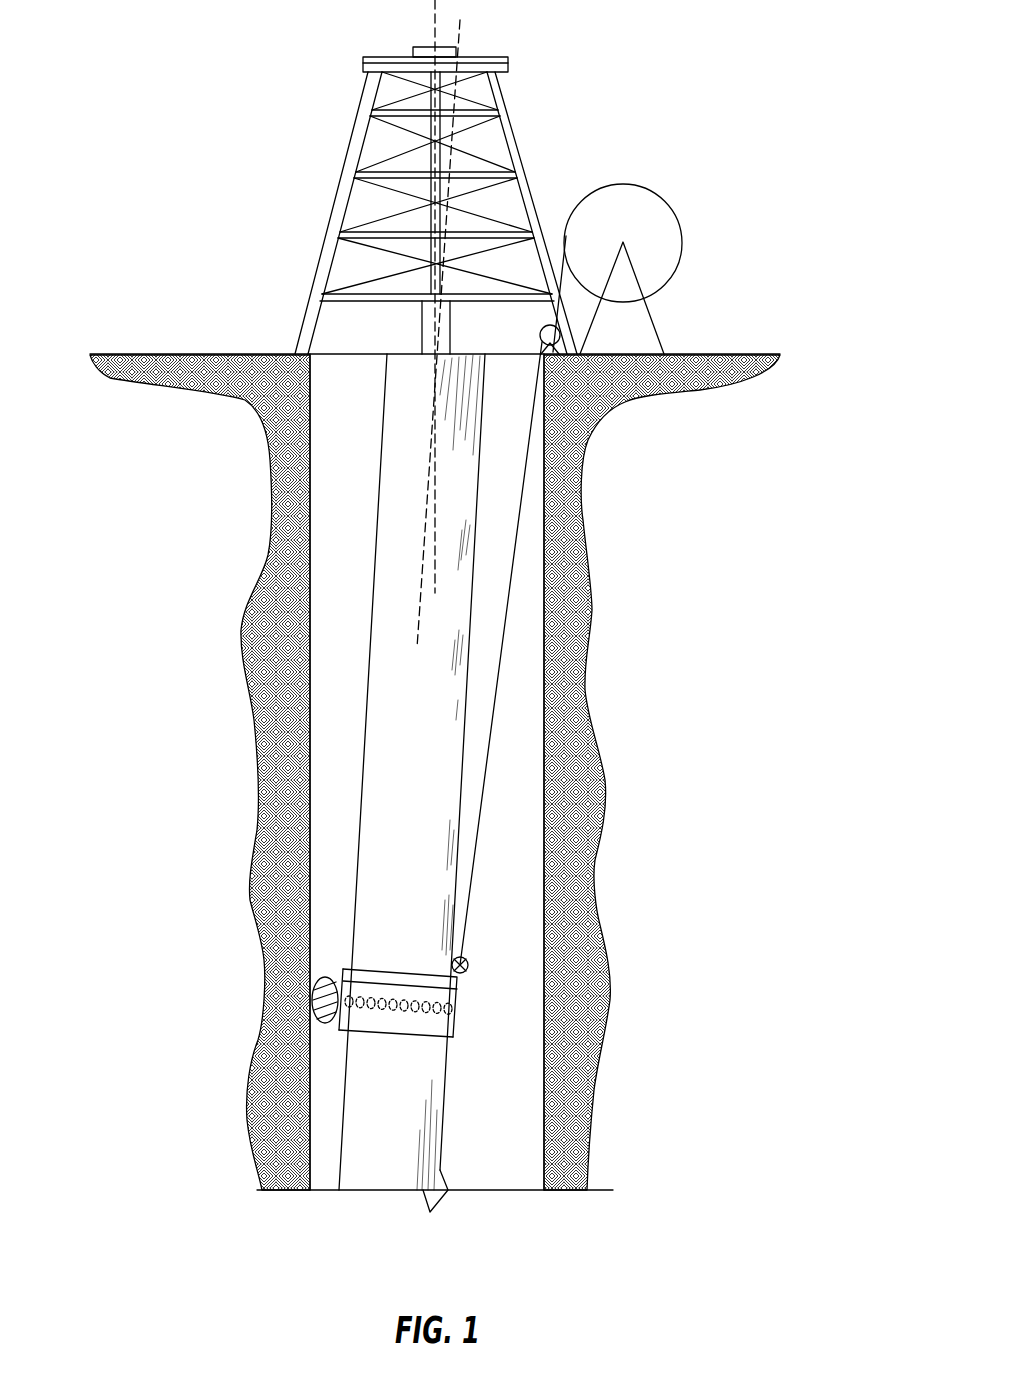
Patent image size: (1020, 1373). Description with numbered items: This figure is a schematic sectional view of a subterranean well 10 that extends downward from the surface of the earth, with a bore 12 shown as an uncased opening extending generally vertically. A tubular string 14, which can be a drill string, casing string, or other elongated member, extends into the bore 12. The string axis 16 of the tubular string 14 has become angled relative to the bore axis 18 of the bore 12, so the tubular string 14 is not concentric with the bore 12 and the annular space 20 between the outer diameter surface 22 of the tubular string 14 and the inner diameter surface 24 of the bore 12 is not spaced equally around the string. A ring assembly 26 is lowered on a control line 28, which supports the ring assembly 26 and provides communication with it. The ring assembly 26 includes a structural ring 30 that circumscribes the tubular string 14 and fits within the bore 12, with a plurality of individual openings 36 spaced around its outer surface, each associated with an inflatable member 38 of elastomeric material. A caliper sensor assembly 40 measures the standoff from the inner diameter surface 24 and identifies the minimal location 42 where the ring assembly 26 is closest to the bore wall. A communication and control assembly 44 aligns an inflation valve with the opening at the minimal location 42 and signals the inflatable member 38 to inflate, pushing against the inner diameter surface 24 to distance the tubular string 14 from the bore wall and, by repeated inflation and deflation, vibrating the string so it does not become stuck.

The subterranean well 10 is at (648, 980).
The bore 12 is at (501, 1108).
The tubular string 14 is at (372, 800).
The string axis 16 is at (460, 33).
The bore axis 18 is at (435, 14).
The annular space 20 is at (324, 433).
The outer diameter surface 22 is at (440, 1142).
The inner diameter surface 24 is at (540, 1060).
The ring assembly 26 is at (466, 980).
The control line 28 is at (507, 585).
The structural ring 30 is at (398, 1028).
The individual openings 36 is at (452, 1005).
The inflatable member 38 is at (318, 997).
The caliper sensor assembly 40 is at (407, 975).
The minimal location 42 is at (343, 955).
The communication and control assembly 44 is at (470, 968).